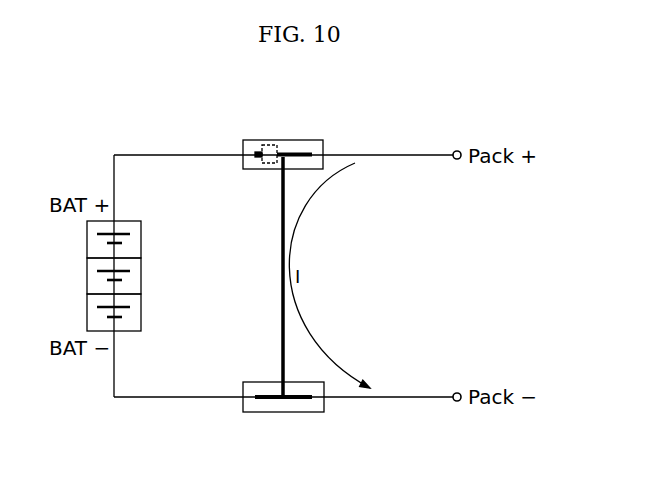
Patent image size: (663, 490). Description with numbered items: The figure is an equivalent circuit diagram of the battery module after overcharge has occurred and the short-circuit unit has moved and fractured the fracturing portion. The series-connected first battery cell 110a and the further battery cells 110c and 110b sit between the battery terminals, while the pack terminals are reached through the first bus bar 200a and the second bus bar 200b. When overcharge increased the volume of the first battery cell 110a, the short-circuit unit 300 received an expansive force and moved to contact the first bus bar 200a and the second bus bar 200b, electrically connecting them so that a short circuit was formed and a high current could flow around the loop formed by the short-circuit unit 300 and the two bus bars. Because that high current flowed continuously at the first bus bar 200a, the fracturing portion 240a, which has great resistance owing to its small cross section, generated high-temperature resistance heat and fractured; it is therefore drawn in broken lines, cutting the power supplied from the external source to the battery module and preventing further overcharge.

The first battery cell 110a is at (141, 237).
The battery cell 110b is at (141, 311).
The battery cell 110c is at (141, 274).
The first bus bar 200a is at (296, 140).
The second bus bar 200b is at (283, 412).
The fracturing portion 240a is at (262, 144).
The short-circuit unit 300 is at (283, 202).